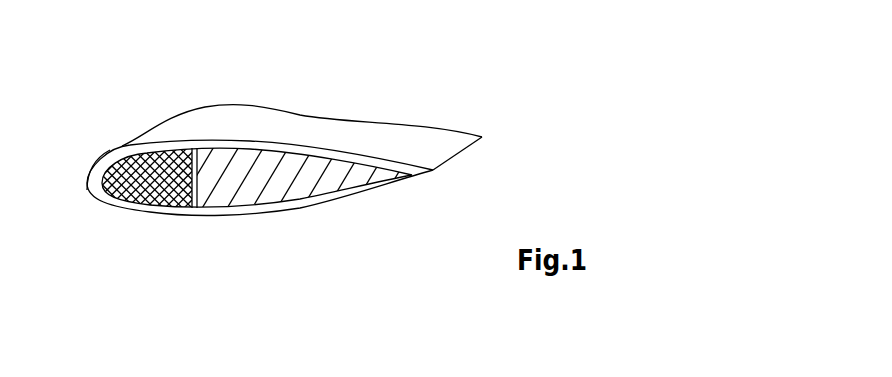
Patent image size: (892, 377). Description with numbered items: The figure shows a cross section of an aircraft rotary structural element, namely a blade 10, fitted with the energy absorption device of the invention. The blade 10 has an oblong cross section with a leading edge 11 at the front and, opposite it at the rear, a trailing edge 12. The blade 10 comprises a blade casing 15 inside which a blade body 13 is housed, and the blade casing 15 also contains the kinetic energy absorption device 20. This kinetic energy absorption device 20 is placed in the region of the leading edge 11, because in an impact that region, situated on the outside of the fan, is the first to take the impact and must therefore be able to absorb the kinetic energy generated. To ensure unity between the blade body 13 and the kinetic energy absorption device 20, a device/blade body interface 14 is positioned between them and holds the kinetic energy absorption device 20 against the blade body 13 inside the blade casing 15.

The blade 10 is at (322, 86).
The leading edge 11 is at (86, 201).
The trailing edge 12 is at (437, 183).
The blade body 13 is at (301, 184).
The device/blade body interface 14 is at (213, 145).
The blade casing 15 is at (158, 127).
The kinetic energy absorption device 20 is at (153, 188).